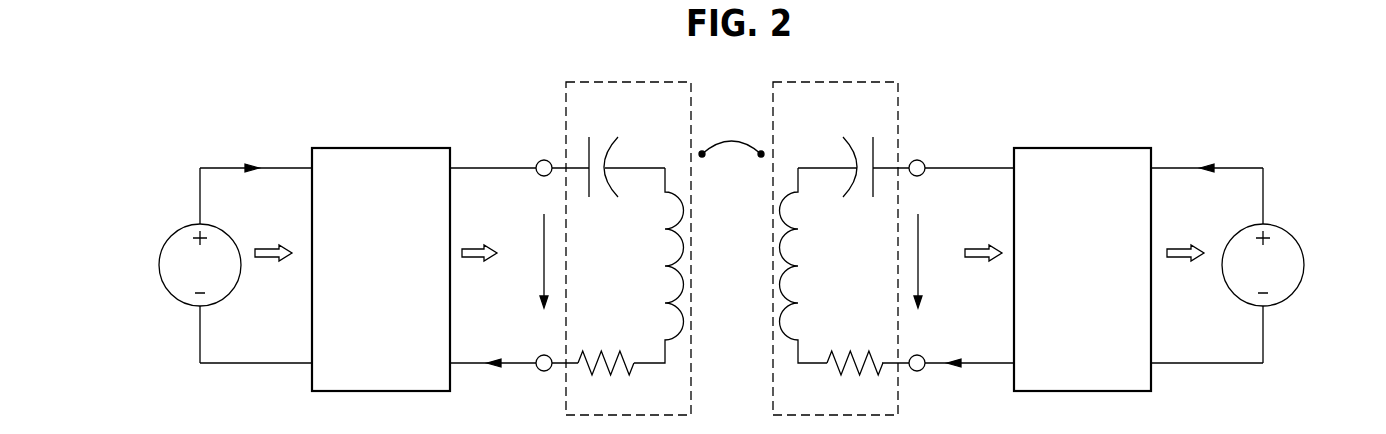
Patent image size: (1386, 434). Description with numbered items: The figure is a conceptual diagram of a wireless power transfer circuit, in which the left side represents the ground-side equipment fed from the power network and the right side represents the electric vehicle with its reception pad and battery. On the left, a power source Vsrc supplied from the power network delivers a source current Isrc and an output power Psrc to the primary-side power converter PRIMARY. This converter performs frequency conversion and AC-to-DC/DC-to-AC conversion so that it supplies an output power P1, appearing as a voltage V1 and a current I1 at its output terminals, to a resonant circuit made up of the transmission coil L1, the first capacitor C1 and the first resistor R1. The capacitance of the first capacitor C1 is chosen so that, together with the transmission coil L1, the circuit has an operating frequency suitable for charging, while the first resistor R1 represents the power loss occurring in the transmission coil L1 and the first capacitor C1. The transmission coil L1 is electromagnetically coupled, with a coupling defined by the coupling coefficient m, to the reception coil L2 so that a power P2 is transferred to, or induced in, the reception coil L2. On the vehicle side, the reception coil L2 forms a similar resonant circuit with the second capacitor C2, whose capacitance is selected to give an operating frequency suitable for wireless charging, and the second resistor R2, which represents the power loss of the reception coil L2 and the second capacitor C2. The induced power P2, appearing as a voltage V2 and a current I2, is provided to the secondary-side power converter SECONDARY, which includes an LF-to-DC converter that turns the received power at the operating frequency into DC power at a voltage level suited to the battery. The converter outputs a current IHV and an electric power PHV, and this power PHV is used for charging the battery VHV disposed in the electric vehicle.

The power source Vsrc is at (178, 265).
The source current Isrc is at (253, 152).
The output power Psrc is at (272, 236).
The primary-side power converter PRIMARY is at (381, 269).
The output power P1 is at (479, 237).
The primary-side voltage V1 is at (533, 261).
The primary-side current I1 is at (495, 349).
The first capacitor C1 is at (627, 150).
The transmission coil L1 is at (659, 265).
The first resistor R1 is at (606, 346).
The coupling coefficient m is at (731, 136).
The second capacitor C2 is at (835, 150).
The reception coil L2 is at (804, 265).
The second resistor R2 is at (855, 346).
The secondary-side voltage V2 is at (930, 261).
The power P2 is at (983, 237).
The secondary-side current I2 is at (953, 349).
The secondary-side power converter SECONDARY is at (1082, 269).
The high-voltage current IHV is at (1205, 153).
The electric power PHV is at (1182, 237).
The battery VHV is at (1287, 265).